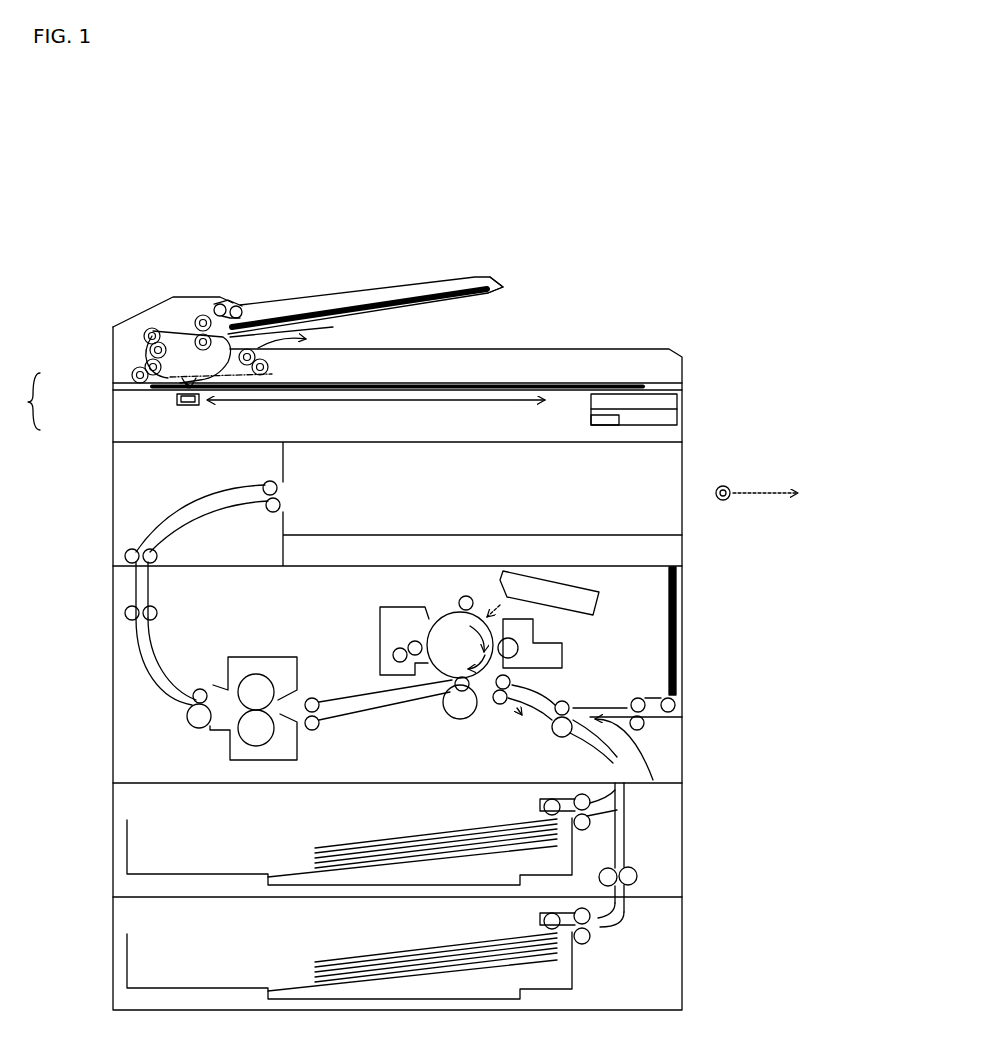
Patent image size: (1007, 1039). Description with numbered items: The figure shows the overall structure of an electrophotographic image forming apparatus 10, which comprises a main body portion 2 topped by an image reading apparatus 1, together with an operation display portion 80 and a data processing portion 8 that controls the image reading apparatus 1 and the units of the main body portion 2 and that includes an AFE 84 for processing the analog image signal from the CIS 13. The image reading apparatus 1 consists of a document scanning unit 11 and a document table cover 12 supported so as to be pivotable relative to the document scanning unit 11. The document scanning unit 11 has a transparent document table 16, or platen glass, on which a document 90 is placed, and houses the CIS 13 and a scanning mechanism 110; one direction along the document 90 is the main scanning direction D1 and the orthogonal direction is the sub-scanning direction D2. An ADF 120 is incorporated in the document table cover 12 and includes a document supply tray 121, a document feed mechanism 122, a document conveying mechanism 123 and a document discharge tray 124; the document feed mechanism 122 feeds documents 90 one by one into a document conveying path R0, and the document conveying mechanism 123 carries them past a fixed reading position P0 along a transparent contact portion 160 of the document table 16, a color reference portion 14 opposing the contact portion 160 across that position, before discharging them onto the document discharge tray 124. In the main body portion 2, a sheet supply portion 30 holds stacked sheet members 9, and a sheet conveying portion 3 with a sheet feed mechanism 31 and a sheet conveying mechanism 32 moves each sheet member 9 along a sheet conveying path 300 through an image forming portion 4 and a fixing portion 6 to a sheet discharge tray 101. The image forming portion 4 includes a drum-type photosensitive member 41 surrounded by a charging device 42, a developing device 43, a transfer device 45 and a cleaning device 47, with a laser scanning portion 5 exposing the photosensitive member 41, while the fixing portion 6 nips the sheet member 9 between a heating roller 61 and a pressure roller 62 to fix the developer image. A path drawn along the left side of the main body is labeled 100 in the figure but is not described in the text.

The image reading apparatus 1 is at (27, 401).
The main body portion 2 is at (690, 607).
The sheet conveying portion 3 is at (668, 872).
The image forming portion 4 is at (351, 637).
The laser scanning portion 5 is at (600, 605).
The fixing portion 6 is at (210, 742).
The data processing portion 8 is at (682, 412).
The sheet member 9 is at (381, 845).
The image forming apparatus 10 is at (697, 283).
The document scanning unit 11 is at (110, 412).
The document table cover 12 is at (110, 378).
The CIS 13 is at (190, 400).
The color reference portion 14 is at (318, 334).
The document table 16 is at (555, 392).
The sheet supply portion 30 is at (125, 832).
The sheet feed mechanism 31 is at (596, 830).
The sheet conveying mechanism 32 is at (268, 480).
The photosensitive member 41 is at (435, 613).
The charging device 42 is at (483, 592).
The developing device 43 is at (535, 630).
The transfer device 45 is at (453, 720).
The cleaning device 47 is at (405, 605).
The heating roller 61 is at (243, 678).
The pressure roller 62 is at (273, 738).
The operation display portion 80 is at (680, 394).
The AFE 84 is at (608, 425).
The document 90 is at (385, 298).
The sheet conveyance path 100 is at (113, 618).
The sheet discharge tray 101 is at (503, 533).
The scanning mechanism 110 is at (200, 402).
The ADF 120 is at (112, 340).
The document supply tray 121 is at (503, 283).
The document feed mechanism 122 is at (232, 303).
The document conveying mechanism 123 is at (203, 314).
The document discharge tray 124 is at (430, 349).
The contact portion 160 is at (181, 401).
The sheet conveying path 300 is at (545, 718).
The document conveying path R0 is at (139, 348).
The fixed reading position P0 is at (235, 372).
The main scanning direction D1 is at (727, 508).
The sub-scanning direction D2 is at (782, 493).